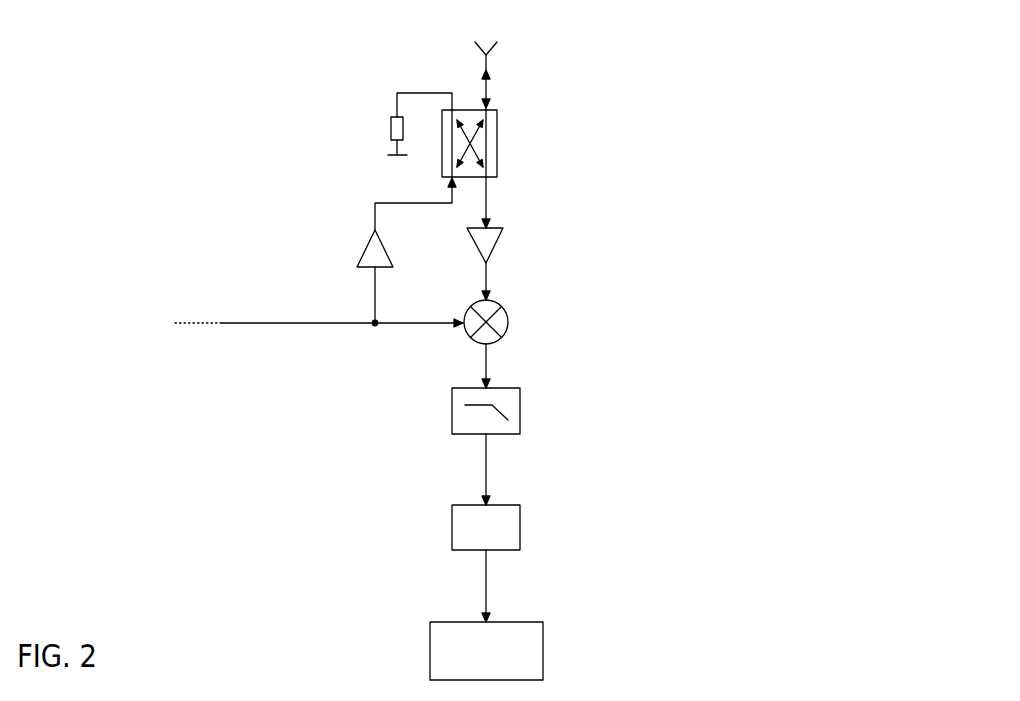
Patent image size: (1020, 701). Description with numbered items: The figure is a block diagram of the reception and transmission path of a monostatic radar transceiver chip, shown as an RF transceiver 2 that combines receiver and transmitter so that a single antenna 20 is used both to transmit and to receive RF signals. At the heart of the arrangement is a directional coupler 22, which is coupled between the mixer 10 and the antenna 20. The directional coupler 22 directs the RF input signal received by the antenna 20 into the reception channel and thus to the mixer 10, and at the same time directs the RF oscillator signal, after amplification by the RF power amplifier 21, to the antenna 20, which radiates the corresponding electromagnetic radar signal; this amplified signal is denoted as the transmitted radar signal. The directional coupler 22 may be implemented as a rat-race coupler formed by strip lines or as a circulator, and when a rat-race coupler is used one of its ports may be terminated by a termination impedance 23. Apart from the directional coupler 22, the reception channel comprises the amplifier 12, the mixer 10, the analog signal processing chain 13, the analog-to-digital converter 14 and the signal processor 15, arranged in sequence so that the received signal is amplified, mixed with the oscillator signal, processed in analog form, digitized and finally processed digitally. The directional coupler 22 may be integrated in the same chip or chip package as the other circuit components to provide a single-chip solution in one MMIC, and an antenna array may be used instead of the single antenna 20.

The RF transceiver 2 is at (766, 30).
The antenna 20 is at (490, 52).
The directional coupler 22 is at (497, 148).
The termination impedance 23 is at (357, 124).
The RF power amplifier 21 is at (362, 250).
The amplifier 12 is at (500, 238).
The mixer 10 is at (506, 312).
The analog signal processing chain 13 is at (520, 405).
The analog-to-digital converter 14 is at (520, 533).
The signal processor 15 is at (543, 650).